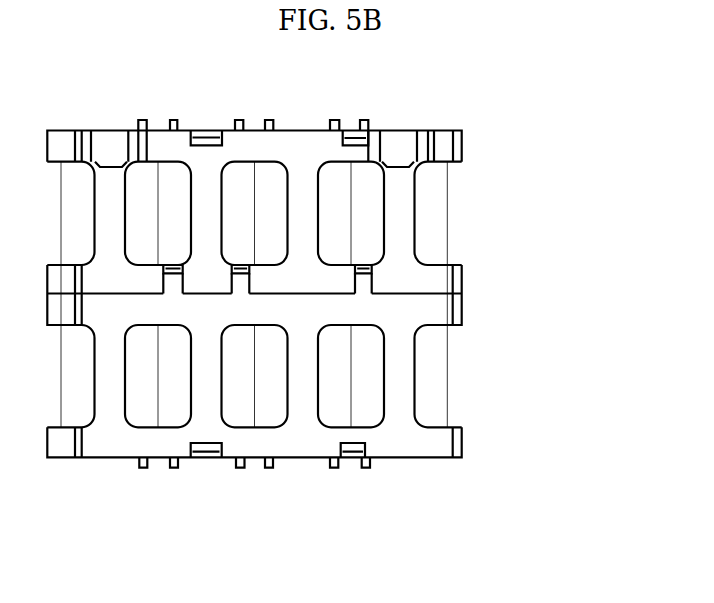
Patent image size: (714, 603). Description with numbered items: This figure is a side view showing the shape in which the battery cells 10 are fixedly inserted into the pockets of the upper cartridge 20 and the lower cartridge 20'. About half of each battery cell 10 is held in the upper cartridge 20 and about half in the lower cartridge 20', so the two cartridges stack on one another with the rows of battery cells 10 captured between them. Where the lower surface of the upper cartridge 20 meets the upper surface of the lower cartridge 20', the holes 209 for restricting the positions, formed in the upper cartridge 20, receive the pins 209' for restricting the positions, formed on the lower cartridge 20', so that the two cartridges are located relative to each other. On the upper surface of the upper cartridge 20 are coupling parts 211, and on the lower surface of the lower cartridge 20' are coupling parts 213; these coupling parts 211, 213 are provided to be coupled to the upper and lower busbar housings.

The battery cells 10 is at (430, 382).
The upper cartridge 20 is at (309, 143).
The lower cartridge 20' is at (309, 441).
The holes for restricting the positions 209 is at (374, 246).
The pins for restricting the positions 209' is at (381, 288).
The coupling parts 211 is at (205, 142).
The coupling parts 213 is at (203, 448).